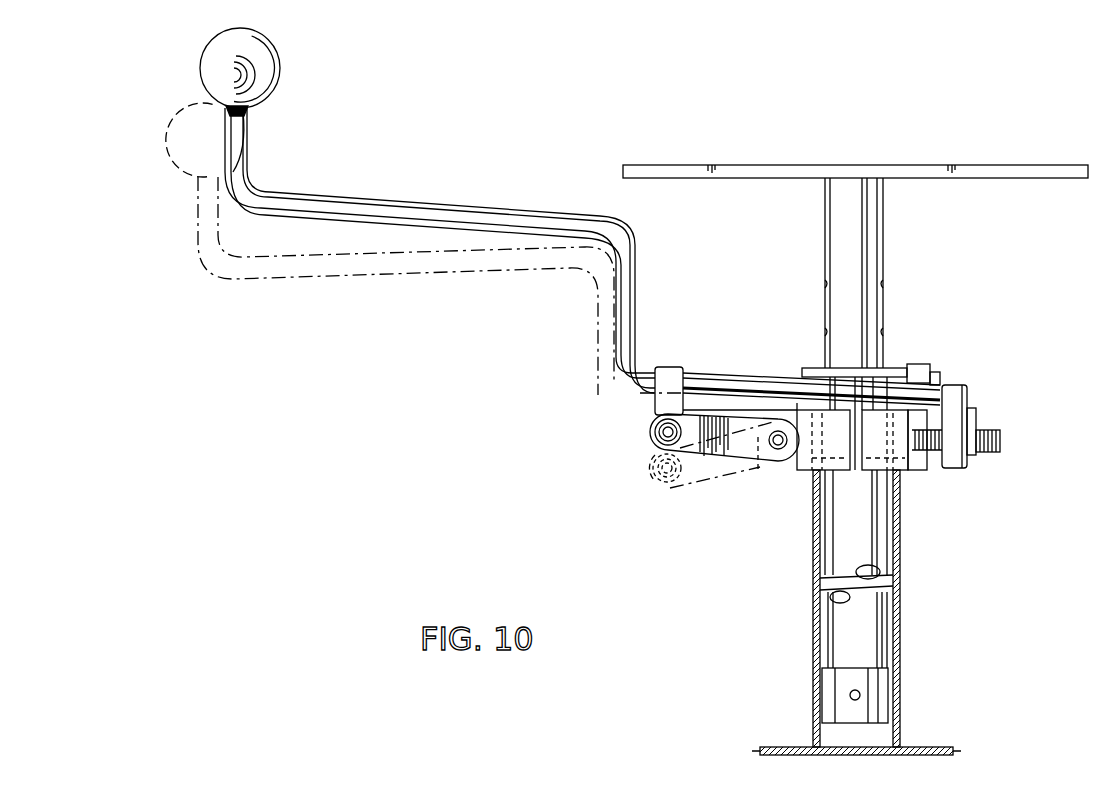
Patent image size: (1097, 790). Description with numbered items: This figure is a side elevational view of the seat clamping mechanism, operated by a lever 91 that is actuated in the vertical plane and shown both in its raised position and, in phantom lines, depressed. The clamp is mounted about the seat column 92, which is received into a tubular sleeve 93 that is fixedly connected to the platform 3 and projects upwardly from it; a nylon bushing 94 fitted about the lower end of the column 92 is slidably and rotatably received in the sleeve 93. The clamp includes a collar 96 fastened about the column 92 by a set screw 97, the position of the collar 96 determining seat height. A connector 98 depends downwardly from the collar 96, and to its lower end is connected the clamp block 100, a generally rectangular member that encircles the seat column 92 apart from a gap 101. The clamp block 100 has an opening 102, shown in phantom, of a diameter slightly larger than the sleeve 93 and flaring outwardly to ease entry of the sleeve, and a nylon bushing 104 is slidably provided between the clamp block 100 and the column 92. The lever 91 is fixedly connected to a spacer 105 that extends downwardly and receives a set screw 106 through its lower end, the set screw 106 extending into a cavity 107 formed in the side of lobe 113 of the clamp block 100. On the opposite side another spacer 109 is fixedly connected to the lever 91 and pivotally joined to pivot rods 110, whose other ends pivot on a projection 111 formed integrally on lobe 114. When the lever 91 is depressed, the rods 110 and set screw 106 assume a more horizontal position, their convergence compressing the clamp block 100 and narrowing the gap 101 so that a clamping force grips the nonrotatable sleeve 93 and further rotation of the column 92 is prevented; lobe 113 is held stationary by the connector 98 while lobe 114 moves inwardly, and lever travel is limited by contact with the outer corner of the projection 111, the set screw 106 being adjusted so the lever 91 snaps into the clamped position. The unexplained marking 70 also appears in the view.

The platform 3 is at (918, 747).
The operating mechanism 70 is at (808, 428).
The lever 91 is at (636, 258).
The seat column 92 is at (885, 308).
The tubular sleeve 93 is at (902, 607).
The nylon bushing 94 is at (880, 690).
The collar 96 is at (895, 368).
The set screw 97 is at (935, 370).
The connector 98 is at (915, 470).
The clamp block 100 is at (812, 471).
The gap 101 is at (855, 471).
The opening 102 is at (905, 472).
The nylon bushing 104 is at (836, 437).
The spacer 105 is at (968, 402).
The set screw 106 is at (1000, 447).
The cavity 107 is at (972, 420).
The spacer 109 is at (652, 398).
The pivot rods 110 is at (695, 468).
The projection 111 is at (760, 466).
The lobe 113 is at (893, 472).
The lobe 114 is at (732, 410).